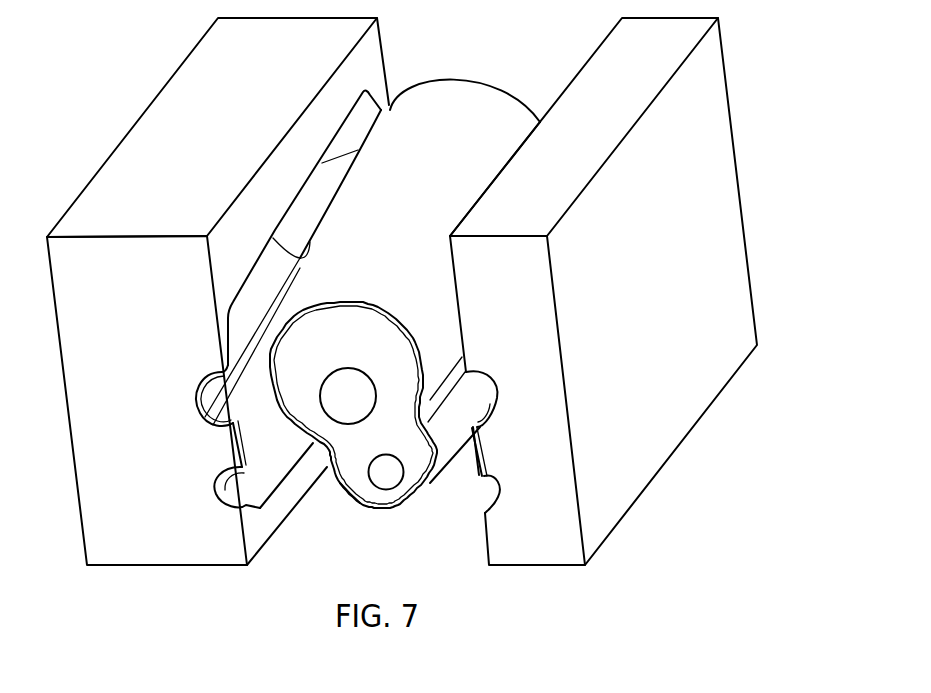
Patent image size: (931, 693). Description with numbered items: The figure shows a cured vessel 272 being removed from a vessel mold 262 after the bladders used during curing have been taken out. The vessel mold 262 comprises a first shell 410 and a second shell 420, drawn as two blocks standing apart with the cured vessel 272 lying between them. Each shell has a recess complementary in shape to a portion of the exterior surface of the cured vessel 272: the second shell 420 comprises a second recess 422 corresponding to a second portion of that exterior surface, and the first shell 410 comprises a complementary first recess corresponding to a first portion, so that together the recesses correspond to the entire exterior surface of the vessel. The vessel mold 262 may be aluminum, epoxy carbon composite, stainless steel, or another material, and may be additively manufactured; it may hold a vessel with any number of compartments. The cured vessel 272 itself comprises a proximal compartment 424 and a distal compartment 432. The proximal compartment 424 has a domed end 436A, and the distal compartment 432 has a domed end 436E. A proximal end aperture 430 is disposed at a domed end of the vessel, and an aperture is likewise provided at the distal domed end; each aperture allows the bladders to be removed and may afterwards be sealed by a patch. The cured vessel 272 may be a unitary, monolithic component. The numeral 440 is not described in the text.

The vessel mold 262 is at (788, 104).
The cured vessel 272 is at (430, 143).
The first shell 410 is at (730, 268).
The second shell 420 is at (200, 88).
The second recess 422 is at (259, 447).
The proximal compartment 424 is at (453, 177).
The proximal end aperture 430 is at (363, 395).
The distal compartment 432 is at (445, 440).
The domed end 436A is at (322, 360).
The domed end 436E is at (363, 481).
The aperture 440 is at (388, 469).